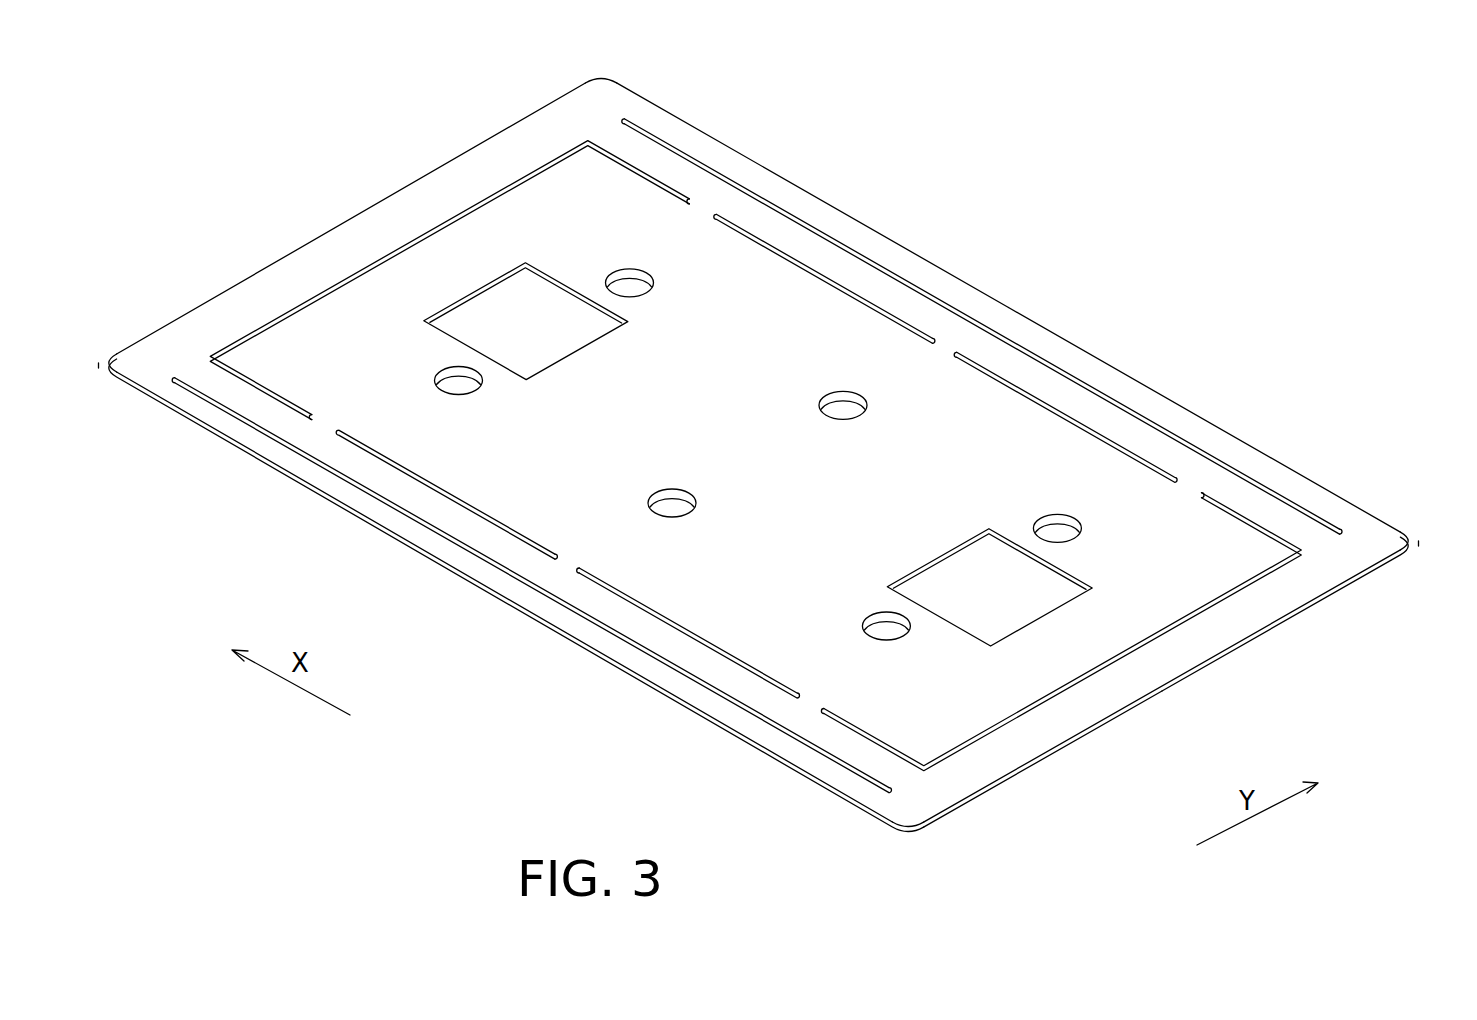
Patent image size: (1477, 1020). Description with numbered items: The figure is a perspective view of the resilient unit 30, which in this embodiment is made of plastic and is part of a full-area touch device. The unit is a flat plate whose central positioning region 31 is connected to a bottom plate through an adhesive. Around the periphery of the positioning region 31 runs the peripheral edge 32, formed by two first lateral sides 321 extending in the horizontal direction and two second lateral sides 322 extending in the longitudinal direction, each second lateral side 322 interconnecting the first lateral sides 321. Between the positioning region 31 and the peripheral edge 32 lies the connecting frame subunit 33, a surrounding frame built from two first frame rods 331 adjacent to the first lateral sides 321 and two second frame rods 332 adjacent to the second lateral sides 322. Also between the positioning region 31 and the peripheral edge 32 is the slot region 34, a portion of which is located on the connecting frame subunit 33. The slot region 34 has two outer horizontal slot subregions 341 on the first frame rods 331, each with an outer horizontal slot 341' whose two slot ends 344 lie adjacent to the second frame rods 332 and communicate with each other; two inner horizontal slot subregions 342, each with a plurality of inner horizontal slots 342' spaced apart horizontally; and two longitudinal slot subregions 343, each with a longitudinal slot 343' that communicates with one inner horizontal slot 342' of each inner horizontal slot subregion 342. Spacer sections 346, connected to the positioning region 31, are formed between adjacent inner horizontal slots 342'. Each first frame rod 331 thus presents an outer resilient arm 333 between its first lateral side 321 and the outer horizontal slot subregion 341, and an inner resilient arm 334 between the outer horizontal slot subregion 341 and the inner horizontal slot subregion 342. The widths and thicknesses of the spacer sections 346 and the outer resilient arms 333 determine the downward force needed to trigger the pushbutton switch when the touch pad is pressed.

The resilient unit 30 is at (1246, 88).
The positioning region 31 is at (765, 250).
The peripheral edge 32 is at (1093, 350).
The first lateral side 321 is at (897, 237).
The second lateral side 322 is at (362, 208).
The connecting frame subunit 33 is at (1205, 658).
The first frame rod 331 is at (857, 223).
The second frame rod 332 is at (260, 287).
The outer resilient arm 333 is at (825, 213).
The inner resilient arm 334 is at (1008, 360).
The slot region 34 is at (1127, 387).
The outer horizontal slot subregion 341 is at (704, 532).
The outer horizontal slot 341' is at (981, 326).
The inner horizontal slot subregion 342 is at (634, 375).
The inner horizontal slot 342' is at (989, 447).
The longitudinal slot subregion 343 is at (613, 455).
The longitudinal slot 343' is at (1062, 638).
The slot end 344 is at (623, 118).
The spacer section 346 is at (940, 347).